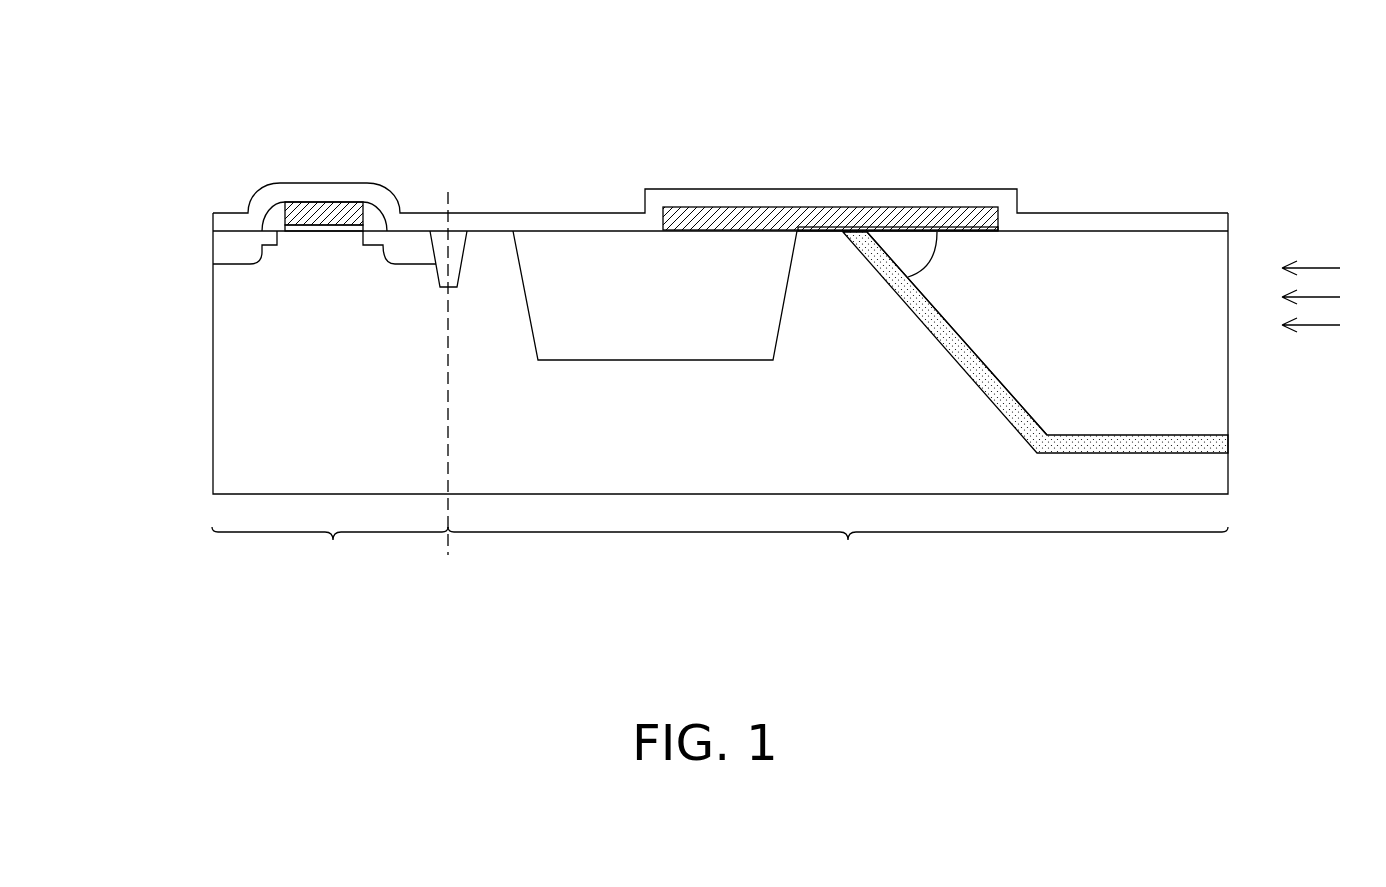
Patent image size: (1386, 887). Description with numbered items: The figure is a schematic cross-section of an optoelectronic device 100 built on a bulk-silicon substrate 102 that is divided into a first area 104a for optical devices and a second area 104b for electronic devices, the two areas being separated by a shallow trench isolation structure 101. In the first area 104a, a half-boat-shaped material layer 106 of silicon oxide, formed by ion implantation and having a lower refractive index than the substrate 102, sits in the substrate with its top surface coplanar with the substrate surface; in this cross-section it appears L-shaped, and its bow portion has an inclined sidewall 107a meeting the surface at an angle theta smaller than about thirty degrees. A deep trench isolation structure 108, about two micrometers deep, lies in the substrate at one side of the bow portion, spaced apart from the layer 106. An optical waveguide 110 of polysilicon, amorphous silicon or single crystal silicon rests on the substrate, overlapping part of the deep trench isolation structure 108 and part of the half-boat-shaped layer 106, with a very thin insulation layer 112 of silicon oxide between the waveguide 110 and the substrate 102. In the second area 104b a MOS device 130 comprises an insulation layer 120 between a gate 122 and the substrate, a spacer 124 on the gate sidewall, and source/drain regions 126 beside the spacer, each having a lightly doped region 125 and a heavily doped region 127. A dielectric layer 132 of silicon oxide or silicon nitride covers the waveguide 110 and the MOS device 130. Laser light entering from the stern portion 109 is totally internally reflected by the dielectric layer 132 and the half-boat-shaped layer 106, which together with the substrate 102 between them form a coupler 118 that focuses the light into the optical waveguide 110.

The optoelectronic device 100 is at (710, 309).
The shallow trench isolation structure 101 is at (458, 242).
The substrate 102 is at (1192, 475).
The first area 104a is at (838, 559).
The second area 104b is at (330, 558).
The half-boat-shaped material layer 106 is at (1101, 342).
The inclined sidewall 107a is at (928, 333).
The deep trench isolation structure 108 is at (592, 252).
The stern portion 109 is at (1230, 276).
The optical waveguide 110 is at (735, 215).
The insulation layer 112 is at (932, 245).
The coupler 118 is at (1011, 286).
The insulation layer 120 is at (348, 222).
The gate 122 is at (328, 210).
The spacer 124 is at (272, 217).
The lightly doped region 125 is at (277, 240).
The source/drain regions 126 is at (249, 307).
The heavily doped region 127 is at (240, 257).
The MOS device 130 is at (310, 202).
The dielectric layer 132 is at (1058, 223).